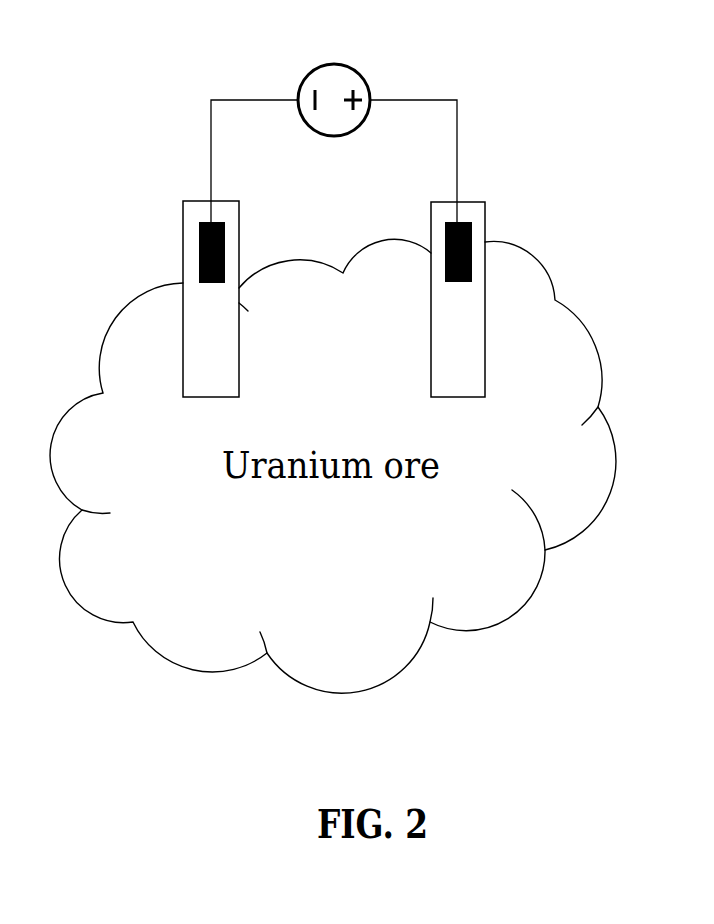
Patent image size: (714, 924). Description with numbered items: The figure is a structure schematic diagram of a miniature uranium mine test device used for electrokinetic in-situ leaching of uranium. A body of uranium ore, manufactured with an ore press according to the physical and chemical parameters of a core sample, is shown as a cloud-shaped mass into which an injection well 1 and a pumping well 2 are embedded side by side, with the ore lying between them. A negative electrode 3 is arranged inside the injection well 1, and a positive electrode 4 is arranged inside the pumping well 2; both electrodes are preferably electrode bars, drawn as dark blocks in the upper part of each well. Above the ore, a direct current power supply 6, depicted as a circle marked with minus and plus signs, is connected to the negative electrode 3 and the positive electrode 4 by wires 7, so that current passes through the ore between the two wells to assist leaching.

The injection well 1 is at (202, 358).
The pumping well 2 is at (468, 338).
The negative electrode 3 is at (203, 222).
The positive electrode 4 is at (470, 227).
The direct current power supply 6 is at (353, 68).
The wires 7 is at (443, 100).